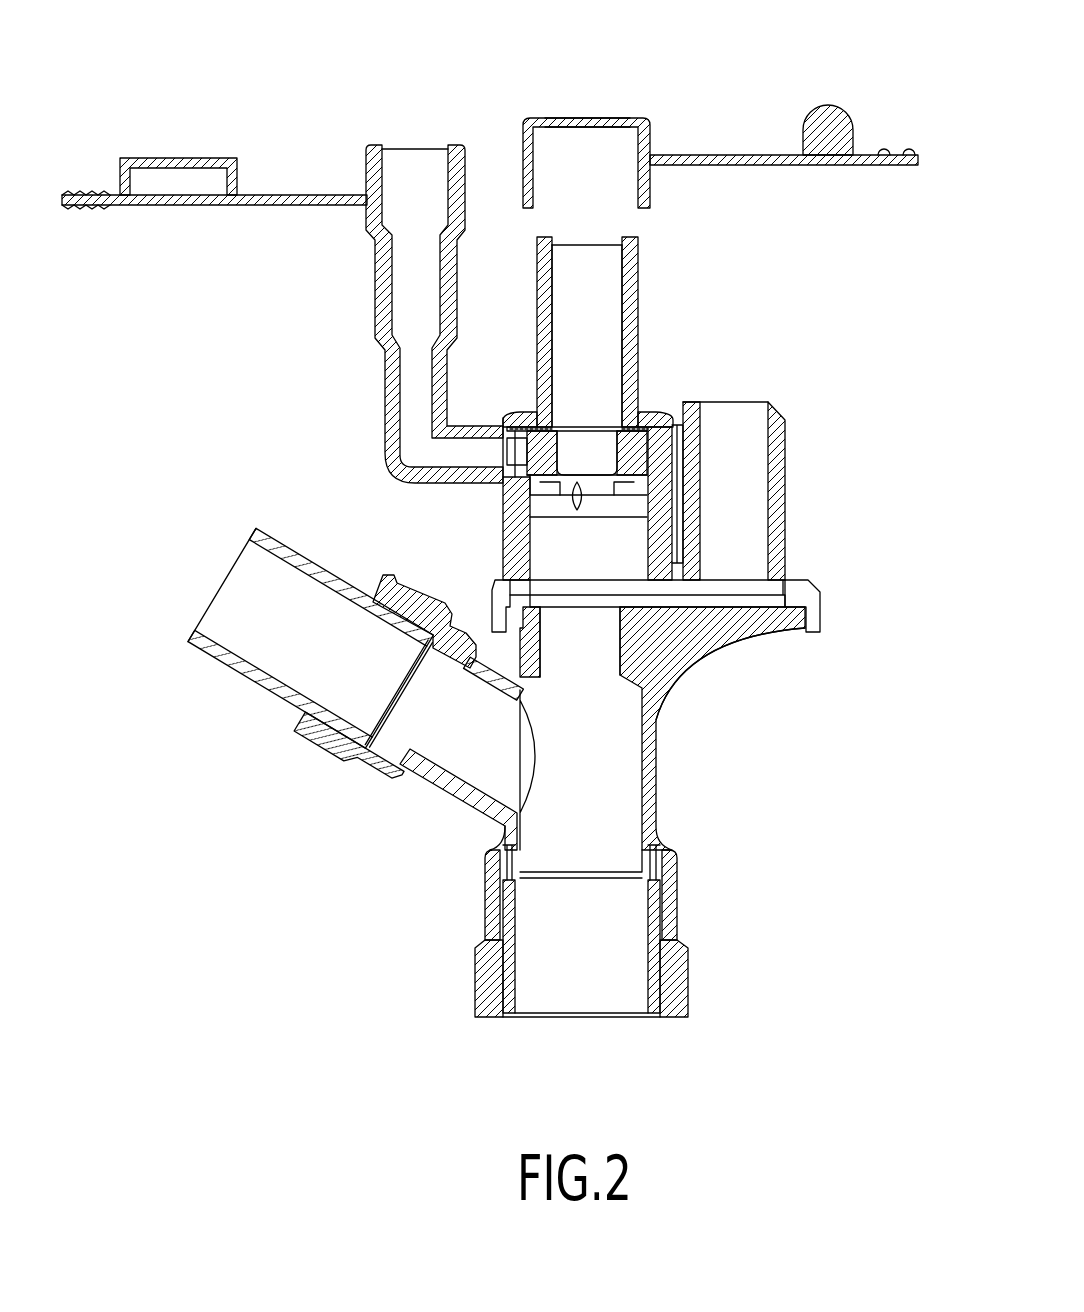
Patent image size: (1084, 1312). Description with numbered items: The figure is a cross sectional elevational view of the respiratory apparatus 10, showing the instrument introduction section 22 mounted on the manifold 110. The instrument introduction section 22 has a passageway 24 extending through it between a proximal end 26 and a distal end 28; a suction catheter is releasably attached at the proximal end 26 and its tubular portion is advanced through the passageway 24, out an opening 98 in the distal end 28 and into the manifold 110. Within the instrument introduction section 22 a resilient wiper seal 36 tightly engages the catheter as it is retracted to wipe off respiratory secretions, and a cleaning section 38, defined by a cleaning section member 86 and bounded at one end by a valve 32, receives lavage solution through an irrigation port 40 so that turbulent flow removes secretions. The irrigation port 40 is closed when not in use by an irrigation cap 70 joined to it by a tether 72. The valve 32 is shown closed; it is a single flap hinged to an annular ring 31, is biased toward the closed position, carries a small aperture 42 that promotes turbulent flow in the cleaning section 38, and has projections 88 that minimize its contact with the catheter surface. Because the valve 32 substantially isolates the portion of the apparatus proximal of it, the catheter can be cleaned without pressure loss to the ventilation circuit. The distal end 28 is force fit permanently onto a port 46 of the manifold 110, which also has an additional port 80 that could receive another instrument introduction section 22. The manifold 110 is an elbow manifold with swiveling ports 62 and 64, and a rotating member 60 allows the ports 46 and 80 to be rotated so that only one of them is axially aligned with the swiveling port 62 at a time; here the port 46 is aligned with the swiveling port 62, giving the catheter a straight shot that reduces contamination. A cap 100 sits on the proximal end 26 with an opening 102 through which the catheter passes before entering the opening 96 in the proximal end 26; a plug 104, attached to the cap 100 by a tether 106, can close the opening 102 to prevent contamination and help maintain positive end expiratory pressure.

The respiratory apparatus 10 is at (843, 284).
The instrument introduction section 22 is at (649, 418).
The passageway 24 is at (583, 332).
The proximal end 26 is at (640, 302).
The distal end 28 is at (510, 502).
The annular ring 31 is at (653, 500).
The valve 32 is at (667, 545).
The wiper seal 36 is at (554, 430).
The cleaning section 38 is at (591, 455).
The irrigation port 40 is at (378, 302).
The aperture 42 is at (620, 503).
The port 46 is at (512, 542).
The rotating member 60 is at (822, 607).
The swiveling port 62 is at (655, 1000).
The swiveling port 64 is at (263, 688).
The irrigation cap 70 is at (165, 206).
The tether 72 is at (287, 195).
The port 80 is at (770, 450).
The cleaning section member 86 is at (658, 430).
The projection 88 is at (578, 512).
The opening 96 is at (590, 242).
The opening 98 is at (522, 562).
The cap 100 is at (523, 135).
The opening 102 is at (583, 120).
The plug 104 is at (827, 112).
The tether 106 is at (722, 158).
The manifold 110 is at (700, 650).